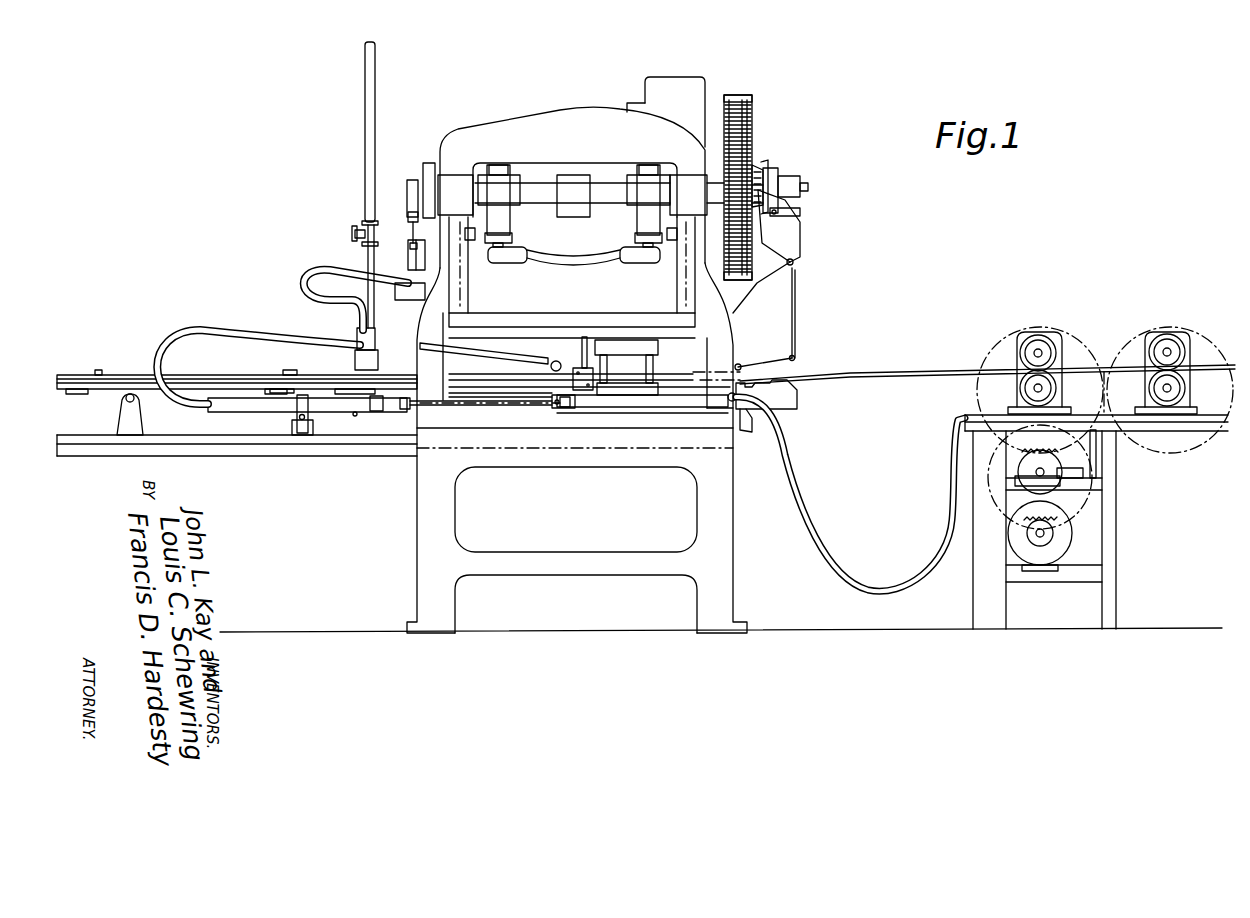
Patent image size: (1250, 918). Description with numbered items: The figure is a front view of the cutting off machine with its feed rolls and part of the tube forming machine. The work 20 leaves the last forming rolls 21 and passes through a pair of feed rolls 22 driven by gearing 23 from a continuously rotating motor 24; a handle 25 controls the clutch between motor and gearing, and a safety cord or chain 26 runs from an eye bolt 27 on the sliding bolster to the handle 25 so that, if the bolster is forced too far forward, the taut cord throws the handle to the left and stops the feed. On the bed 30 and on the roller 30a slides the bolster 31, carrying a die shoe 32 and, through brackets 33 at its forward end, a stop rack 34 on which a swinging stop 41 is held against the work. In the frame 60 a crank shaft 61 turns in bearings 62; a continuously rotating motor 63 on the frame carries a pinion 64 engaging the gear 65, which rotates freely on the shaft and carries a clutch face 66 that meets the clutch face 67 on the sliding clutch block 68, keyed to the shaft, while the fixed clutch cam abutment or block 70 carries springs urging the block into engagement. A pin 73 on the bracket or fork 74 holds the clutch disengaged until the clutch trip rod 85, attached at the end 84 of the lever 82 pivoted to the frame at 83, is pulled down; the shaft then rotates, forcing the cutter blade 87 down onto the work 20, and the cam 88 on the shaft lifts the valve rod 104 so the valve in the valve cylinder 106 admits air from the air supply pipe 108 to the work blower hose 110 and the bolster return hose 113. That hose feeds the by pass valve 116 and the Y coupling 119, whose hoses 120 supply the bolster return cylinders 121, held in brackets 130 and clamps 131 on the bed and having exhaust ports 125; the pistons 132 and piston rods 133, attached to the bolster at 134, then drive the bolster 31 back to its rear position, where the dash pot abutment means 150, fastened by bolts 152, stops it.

The work 20 is at (898, 372).
The last forming rolls 21 is at (1170, 345).
The feed rolls 22 is at (1052, 350).
The gearing 23 is at (1076, 356).
The continuously rotating motor 24 is at (1068, 535).
The handle 25 is at (1105, 432).
The safety cord or chain 26 is at (950, 480).
The eye bolt 27 is at (731, 400).
The bed 30 is at (620, 420).
The roller 30a is at (135, 418).
The bolster 31 is at (638, 398).
The die shoe 32 is at (651, 384).
The brackets 33 is at (560, 400).
The stop rack 34 is at (104, 376).
The swinging stop 41 is at (290, 376).
The frame 60 is at (538, 115).
The crank shaft 61 is at (427, 175).
The bearings 62 is at (452, 185).
The continuously rotating motor 63 is at (688, 98).
The pinion 64 is at (738, 101).
The gear 65 is at (748, 146).
The clutch face 66 is at (757, 168).
The clutch face 67 is at (766, 172).
The sliding clutch block 68 is at (779, 180).
The clutch cam abutment or block 70 is at (796, 186).
The pin 73 is at (800, 222).
The bracket or fork 74 is at (785, 240).
The lever 82 is at (755, 363).
The pivot 83 is at (739, 363).
The end of lever 84 is at (796, 359).
The clutch trip rod 85 is at (797, 323).
The cutter blade 87 is at (598, 338).
The cam 88 is at (418, 228).
The valve rod 104 is at (368, 234).
The valve cylinder 106 is at (403, 272).
The air supply pipe 108 is at (365, 180).
The work blower hose 110 is at (408, 348).
The bolster return hose 113 is at (313, 272).
The by pass valve 116 is at (356, 358).
The Y coupling 119 is at (357, 333).
The hoses 120 is at (280, 334).
The bolster return cylinders 121 is at (252, 406).
The exhaust ports 125 is at (354, 417).
The brackets 130 is at (300, 437).
The clamps 131 is at (296, 409).
The pistons 132 is at (376, 411).
The piston rods 133 is at (407, 412).
The attachment point 134 is at (568, 406).
The abutment means 150 is at (782, 392).
The bolts 152 is at (746, 432).